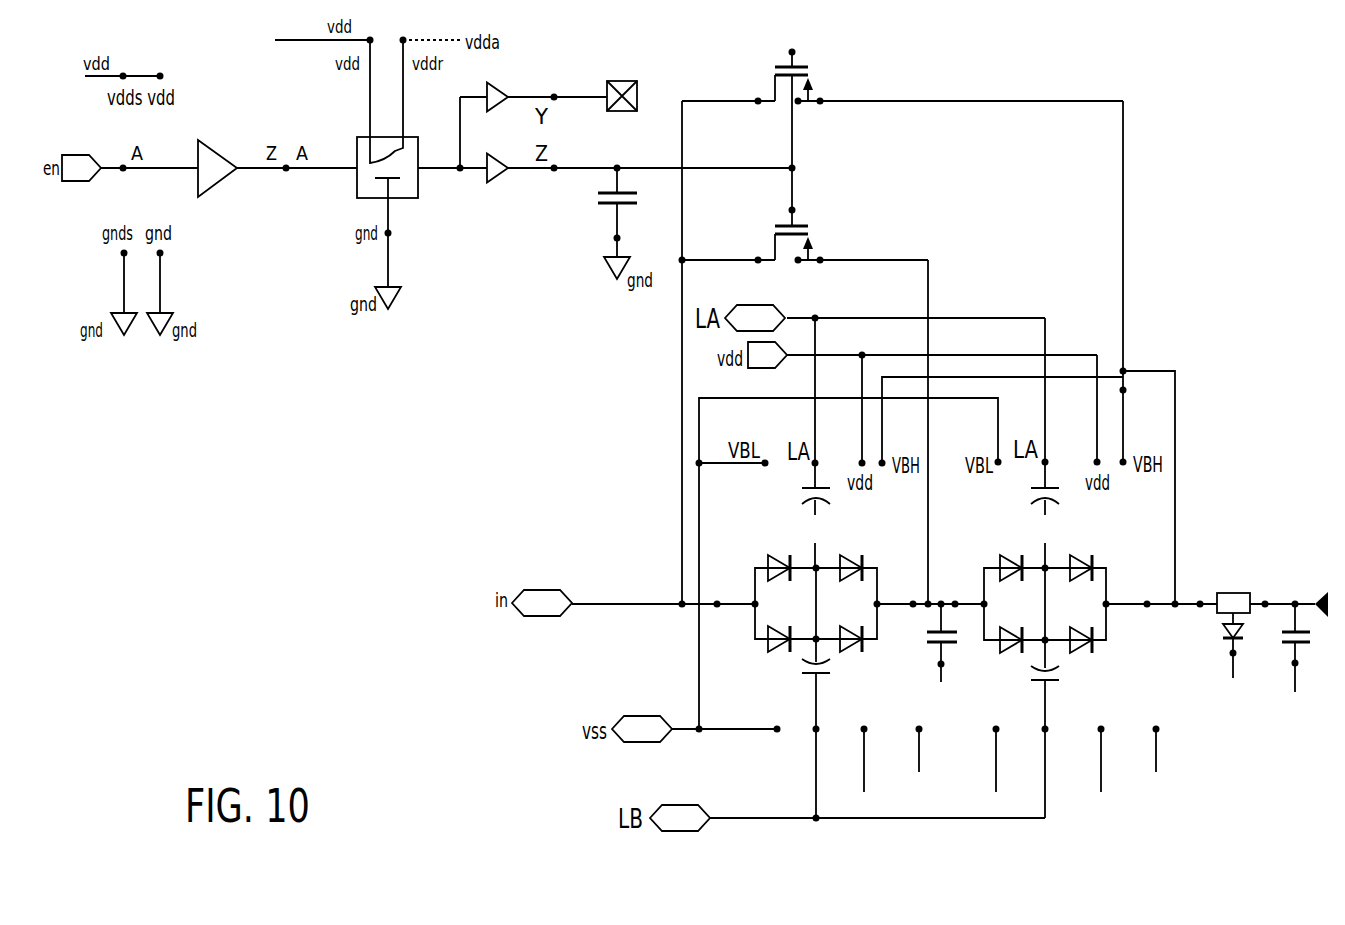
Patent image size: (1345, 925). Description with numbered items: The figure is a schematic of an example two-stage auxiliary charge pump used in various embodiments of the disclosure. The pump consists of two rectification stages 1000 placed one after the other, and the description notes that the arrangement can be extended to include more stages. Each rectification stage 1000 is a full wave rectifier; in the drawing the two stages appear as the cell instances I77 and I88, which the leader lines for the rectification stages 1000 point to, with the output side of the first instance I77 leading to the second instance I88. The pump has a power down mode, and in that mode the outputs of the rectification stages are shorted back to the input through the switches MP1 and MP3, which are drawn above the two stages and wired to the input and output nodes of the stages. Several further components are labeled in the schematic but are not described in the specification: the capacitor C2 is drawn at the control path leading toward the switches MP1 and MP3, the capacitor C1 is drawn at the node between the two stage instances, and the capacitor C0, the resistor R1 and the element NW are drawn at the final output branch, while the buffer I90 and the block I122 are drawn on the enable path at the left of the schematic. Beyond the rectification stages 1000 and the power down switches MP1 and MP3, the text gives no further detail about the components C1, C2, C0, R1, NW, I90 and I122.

The rectification stage 1000 is at (921, 618).
The rectifier cell I77 is at (831, 618).
The rectifier cell I88 is at (1065, 616).
The switch MP1 is at (801, 139).
The switch MP3 is at (801, 262).
The capacitor C1 is at (937, 649).
The capacitor C2 is at (632, 223).
The capacitor C0 is at (1312, 649).
The resistor R1 is at (1233, 588).
The diode NW is at (1213, 646).
The buffer I90 is at (260, 158).
The level shifter I122 is at (497, 174).